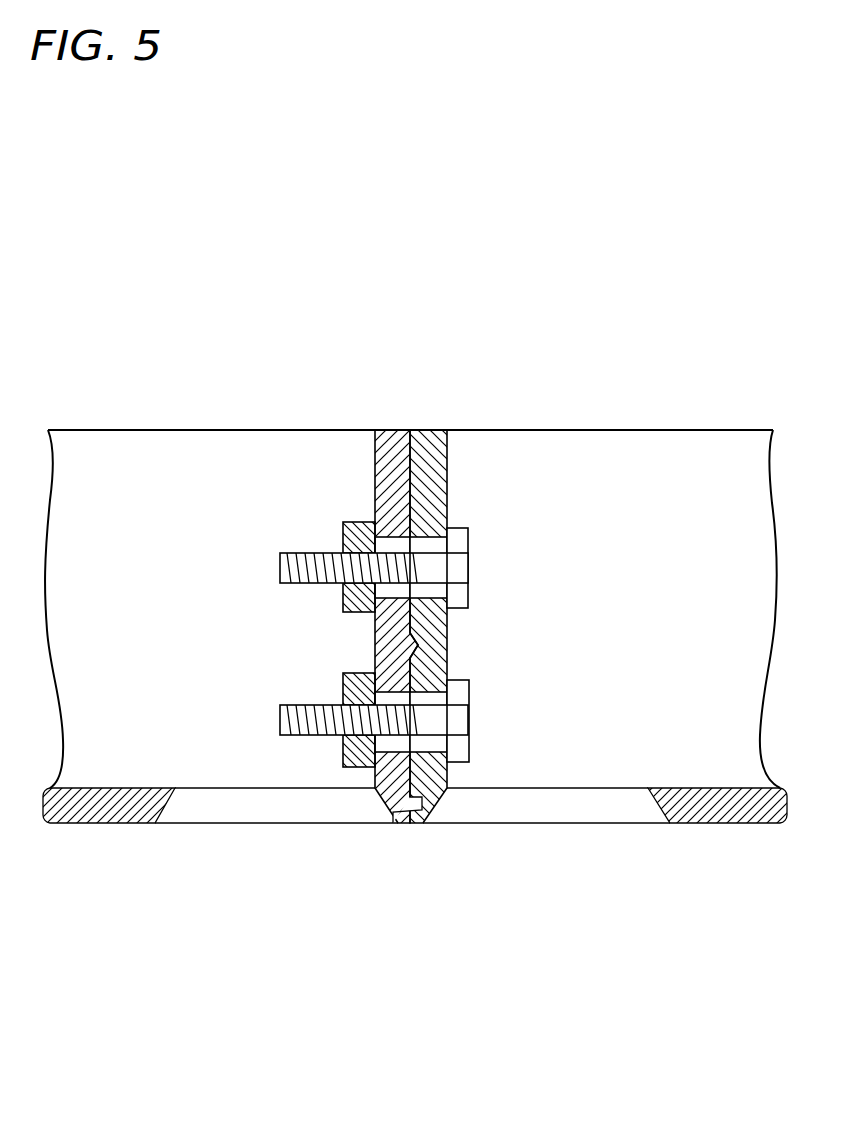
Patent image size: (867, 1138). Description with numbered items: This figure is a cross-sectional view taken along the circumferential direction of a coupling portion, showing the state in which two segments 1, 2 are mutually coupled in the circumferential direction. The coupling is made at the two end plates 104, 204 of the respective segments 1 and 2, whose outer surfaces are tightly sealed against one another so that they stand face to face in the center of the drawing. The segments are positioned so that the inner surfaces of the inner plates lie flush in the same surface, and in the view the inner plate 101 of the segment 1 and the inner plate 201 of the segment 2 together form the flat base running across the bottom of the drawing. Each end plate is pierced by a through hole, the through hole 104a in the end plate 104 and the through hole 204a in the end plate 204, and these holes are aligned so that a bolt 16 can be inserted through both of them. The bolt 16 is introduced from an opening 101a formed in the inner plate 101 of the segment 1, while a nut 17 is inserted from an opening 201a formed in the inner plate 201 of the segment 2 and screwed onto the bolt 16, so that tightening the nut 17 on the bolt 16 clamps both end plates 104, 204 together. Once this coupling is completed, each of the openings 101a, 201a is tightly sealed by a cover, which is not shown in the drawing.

The segment 1 is at (658, 860).
The segment 2 is at (185, 852).
The bolt 16 is at (460, 595).
The nut 17 is at (346, 606).
The inner plate 101 is at (747, 813).
The opening 101a is at (540, 805).
The end plate 104 is at (433, 458).
The through hole 104a is at (432, 543).
The inner plate 201 is at (83, 823).
The opening 201a is at (237, 812).
The end plate 204 is at (392, 470).
The through hole 204a is at (393, 545).